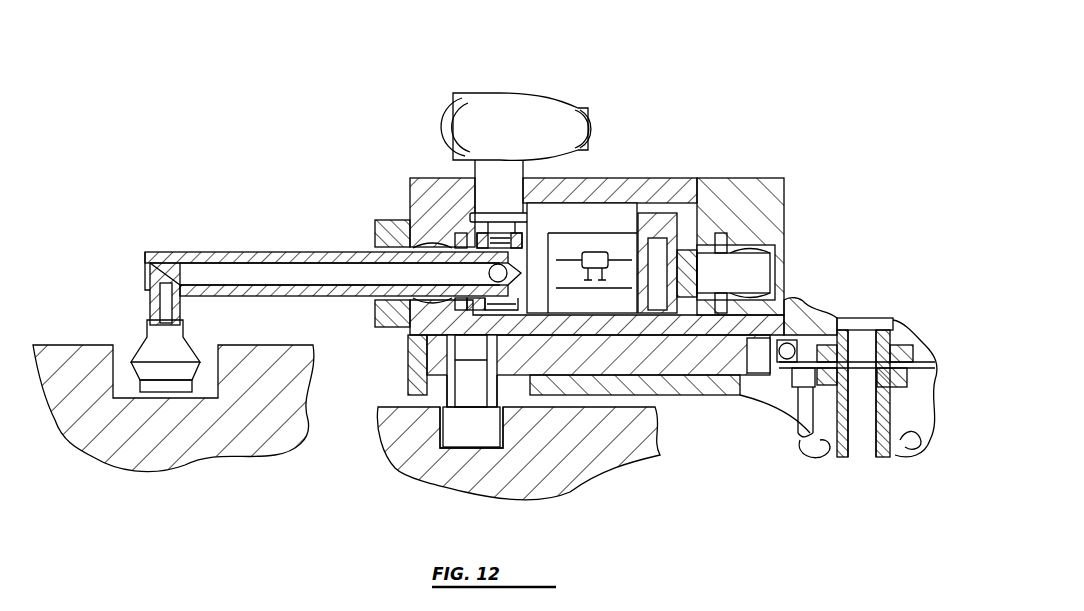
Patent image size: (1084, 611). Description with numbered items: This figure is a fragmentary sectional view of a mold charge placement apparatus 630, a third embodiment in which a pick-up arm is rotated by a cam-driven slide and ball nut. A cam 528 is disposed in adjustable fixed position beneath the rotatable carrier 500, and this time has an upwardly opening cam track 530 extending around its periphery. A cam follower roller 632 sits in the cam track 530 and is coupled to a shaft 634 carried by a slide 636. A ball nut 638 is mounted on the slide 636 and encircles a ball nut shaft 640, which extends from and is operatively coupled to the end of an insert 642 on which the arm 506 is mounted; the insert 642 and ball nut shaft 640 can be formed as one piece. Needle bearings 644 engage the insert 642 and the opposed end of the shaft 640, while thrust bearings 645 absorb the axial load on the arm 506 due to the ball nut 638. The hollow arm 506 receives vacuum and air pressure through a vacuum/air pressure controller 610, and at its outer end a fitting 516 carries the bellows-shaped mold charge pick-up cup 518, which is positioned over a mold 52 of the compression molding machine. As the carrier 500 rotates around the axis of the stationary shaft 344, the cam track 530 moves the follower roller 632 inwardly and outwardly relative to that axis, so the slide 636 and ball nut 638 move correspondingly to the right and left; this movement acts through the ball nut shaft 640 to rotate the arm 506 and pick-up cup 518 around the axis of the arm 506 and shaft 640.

The mold 52 is at (123, 338).
The arm 506 is at (262, 251).
The fitting 516 is at (150, 305).
The mold charge pick-up cup 518 is at (195, 338).
The mold charge placement apparatus 630 is at (726, 108).
The vacuum/air pressure controller 610 is at (518, 106).
The ball nut shaft 640 is at (547, 245).
The ball nut 638 is at (618, 240).
The thrust bearings 645 is at (458, 244).
The needle bearings 644 is at (442, 247).
The insert 642 is at (395, 300).
The shaft 634 is at (467, 353).
The slide 636 is at (667, 358).
The carrier 500 is at (723, 388).
The cam follower roller 632 is at (475, 440).
The cam 528 is at (592, 447).
The cam track 530 is at (440, 425).
The shaft 344 is at (843, 445).